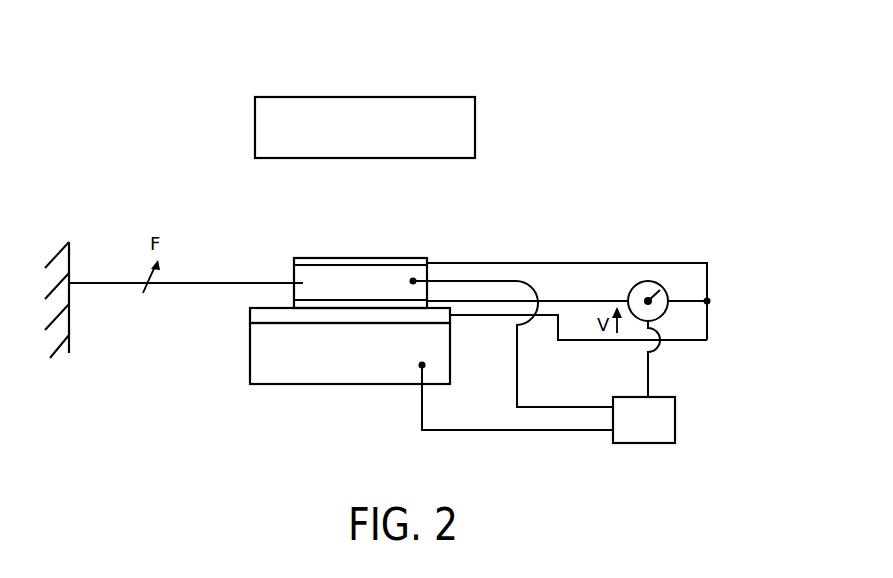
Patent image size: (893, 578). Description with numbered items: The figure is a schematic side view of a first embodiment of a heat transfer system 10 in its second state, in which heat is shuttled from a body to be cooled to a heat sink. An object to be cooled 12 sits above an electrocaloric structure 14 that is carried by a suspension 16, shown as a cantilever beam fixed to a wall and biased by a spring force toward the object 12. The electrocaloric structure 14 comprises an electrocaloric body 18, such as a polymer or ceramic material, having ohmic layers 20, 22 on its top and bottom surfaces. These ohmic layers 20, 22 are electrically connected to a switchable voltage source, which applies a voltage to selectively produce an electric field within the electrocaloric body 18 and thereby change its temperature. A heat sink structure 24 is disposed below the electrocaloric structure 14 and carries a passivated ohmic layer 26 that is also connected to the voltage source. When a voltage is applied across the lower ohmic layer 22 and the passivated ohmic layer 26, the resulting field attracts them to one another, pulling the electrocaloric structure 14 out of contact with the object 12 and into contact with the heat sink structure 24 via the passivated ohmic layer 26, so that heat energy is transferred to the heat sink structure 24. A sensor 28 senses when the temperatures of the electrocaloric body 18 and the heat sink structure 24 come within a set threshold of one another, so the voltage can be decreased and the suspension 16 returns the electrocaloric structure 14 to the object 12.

The heat transfer system 10 is at (103, 102).
The object to be cooled 12 is at (477, 129).
The electrocaloric structure 14 is at (339, 295).
The suspension 16 is at (102, 283).
The electrocaloric body 18 is at (300, 285).
The ohmic layer 20 is at (296, 261).
The ohmic layer 22 is at (297, 302).
The heat sink structure 24 is at (267, 363).
The passivated ohmic layer 26 is at (440, 317).
The sensor 28 is at (677, 422).